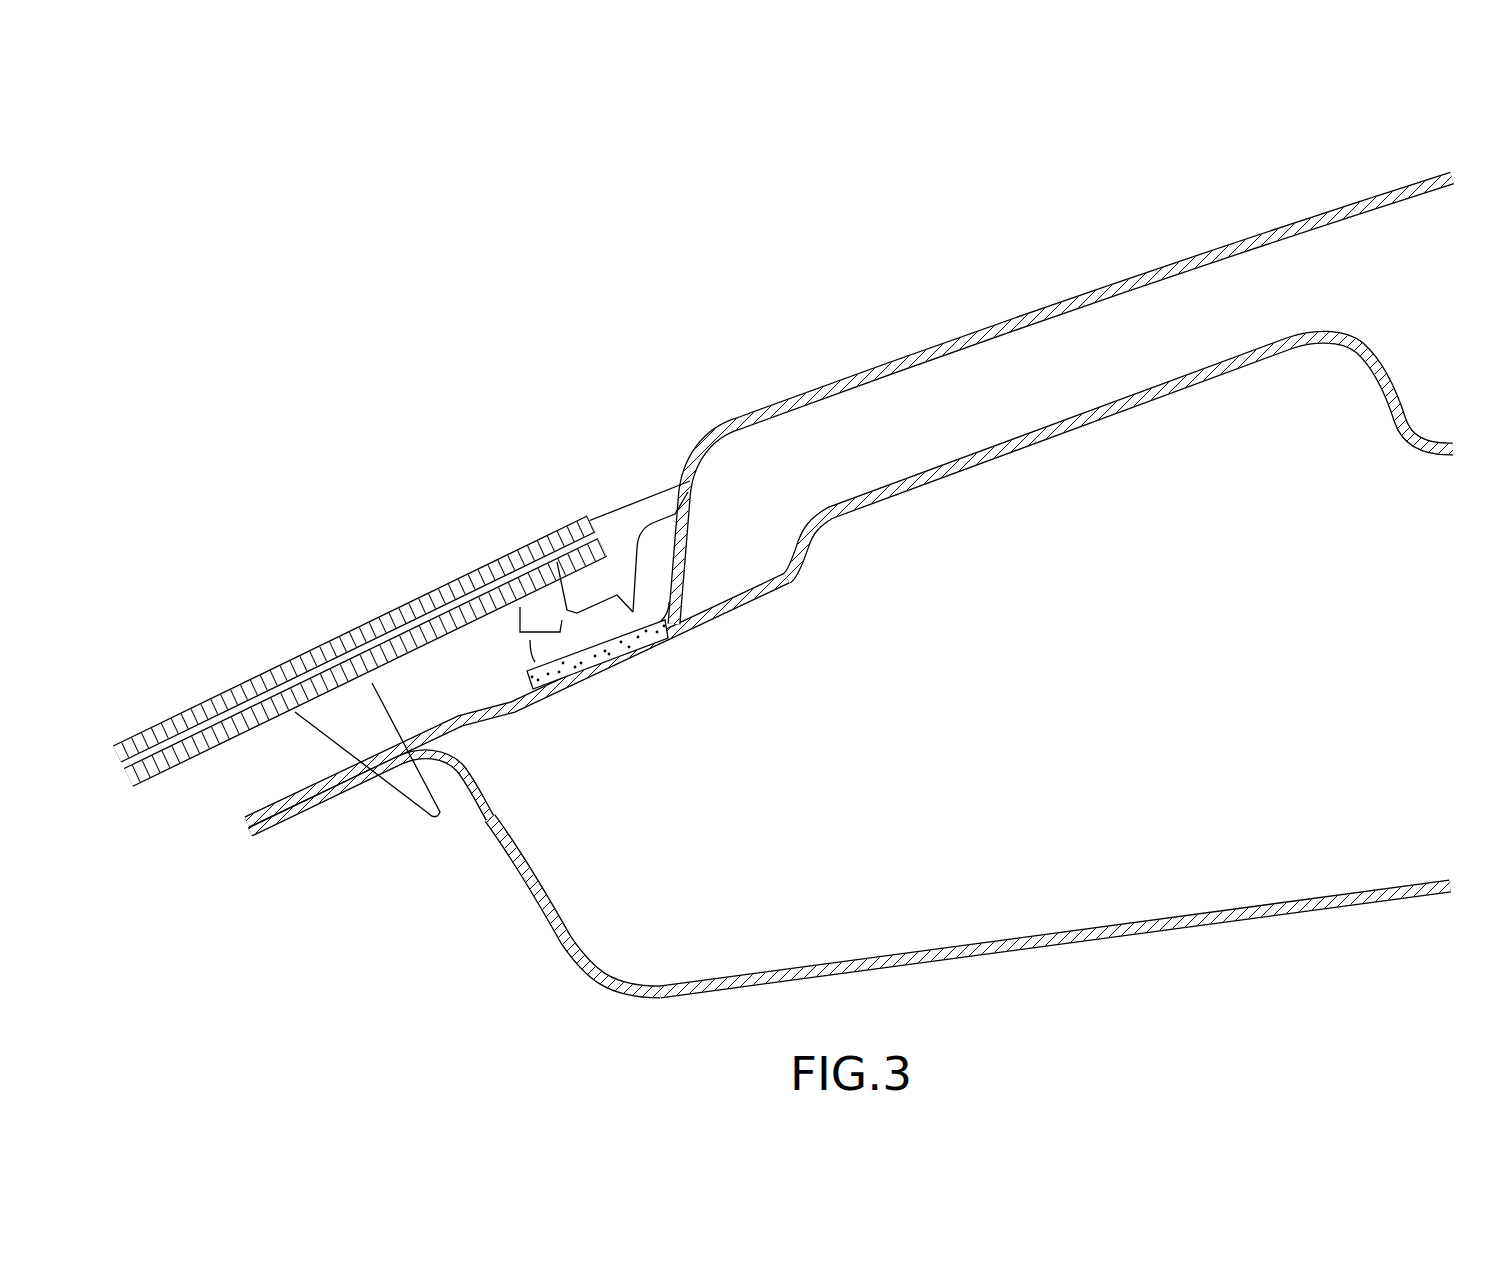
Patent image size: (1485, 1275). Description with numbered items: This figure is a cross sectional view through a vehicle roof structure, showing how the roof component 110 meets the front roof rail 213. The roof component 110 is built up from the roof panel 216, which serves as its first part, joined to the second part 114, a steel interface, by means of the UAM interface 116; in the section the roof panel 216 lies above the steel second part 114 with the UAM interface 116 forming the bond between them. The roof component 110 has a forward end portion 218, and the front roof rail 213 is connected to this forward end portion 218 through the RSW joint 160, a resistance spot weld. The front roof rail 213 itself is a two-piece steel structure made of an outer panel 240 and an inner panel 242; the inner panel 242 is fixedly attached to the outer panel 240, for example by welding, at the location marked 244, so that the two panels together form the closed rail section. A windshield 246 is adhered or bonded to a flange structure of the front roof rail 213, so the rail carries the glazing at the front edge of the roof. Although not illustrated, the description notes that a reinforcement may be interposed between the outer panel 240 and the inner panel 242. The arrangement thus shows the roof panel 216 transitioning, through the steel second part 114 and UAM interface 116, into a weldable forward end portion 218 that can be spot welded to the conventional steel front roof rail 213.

The roof component 110 is at (885, 270).
The second part 114 is at (675, 620).
The UAM interface 116 is at (546, 578).
The RSW joint 160 is at (607, 665).
The front roof rail 213 is at (651, 1021).
The roof panel 216 is at (990, 318).
The forward end portion 218 is at (698, 437).
The outer panel 240 is at (889, 476).
The inner panel 242 is at (1126, 938).
The weld attachment 244 is at (262, 838).
The windshield 246 is at (187, 712).